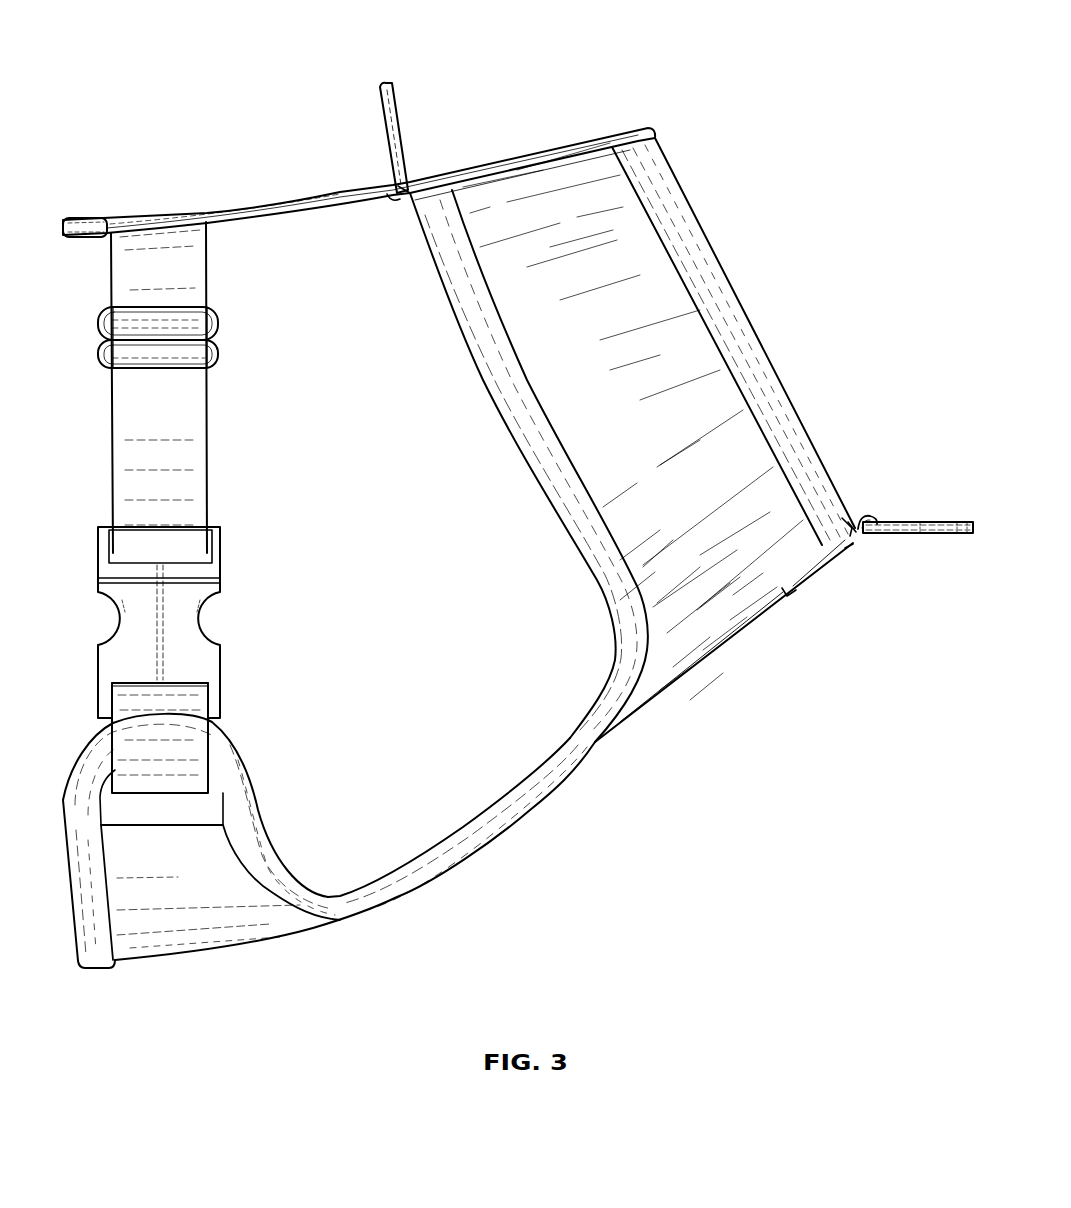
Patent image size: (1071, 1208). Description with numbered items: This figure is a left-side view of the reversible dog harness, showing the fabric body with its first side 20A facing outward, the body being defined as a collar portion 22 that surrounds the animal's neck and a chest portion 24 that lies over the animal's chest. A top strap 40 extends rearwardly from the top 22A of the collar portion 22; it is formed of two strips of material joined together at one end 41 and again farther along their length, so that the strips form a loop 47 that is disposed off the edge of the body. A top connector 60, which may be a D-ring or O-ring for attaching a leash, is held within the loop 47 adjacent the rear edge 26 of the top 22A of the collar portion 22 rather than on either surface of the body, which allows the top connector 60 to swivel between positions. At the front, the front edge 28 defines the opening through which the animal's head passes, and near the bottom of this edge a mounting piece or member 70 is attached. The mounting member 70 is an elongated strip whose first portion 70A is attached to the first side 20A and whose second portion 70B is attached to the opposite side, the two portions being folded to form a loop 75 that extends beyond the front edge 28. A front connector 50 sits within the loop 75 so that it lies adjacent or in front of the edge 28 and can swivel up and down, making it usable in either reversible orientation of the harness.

The first side 20A is at (658, 330).
The collar portion 22 is at (690, 383).
The top of the collar portion 22A is at (577, 170).
The chest portion 24 is at (520, 810).
The rear edge 26 is at (408, 190).
The front edge 28 is at (847, 550).
The top strap 40 is at (352, 185).
The end 41 is at (67, 214).
The loop 47 is at (393, 198).
The front connector 50 is at (937, 527).
The top connector 60 is at (393, 122).
The mounting piece or member 70 is at (869, 493).
The first portion 70A is at (793, 590).
The second portion 70B is at (855, 527).
The loop 75 is at (867, 532).